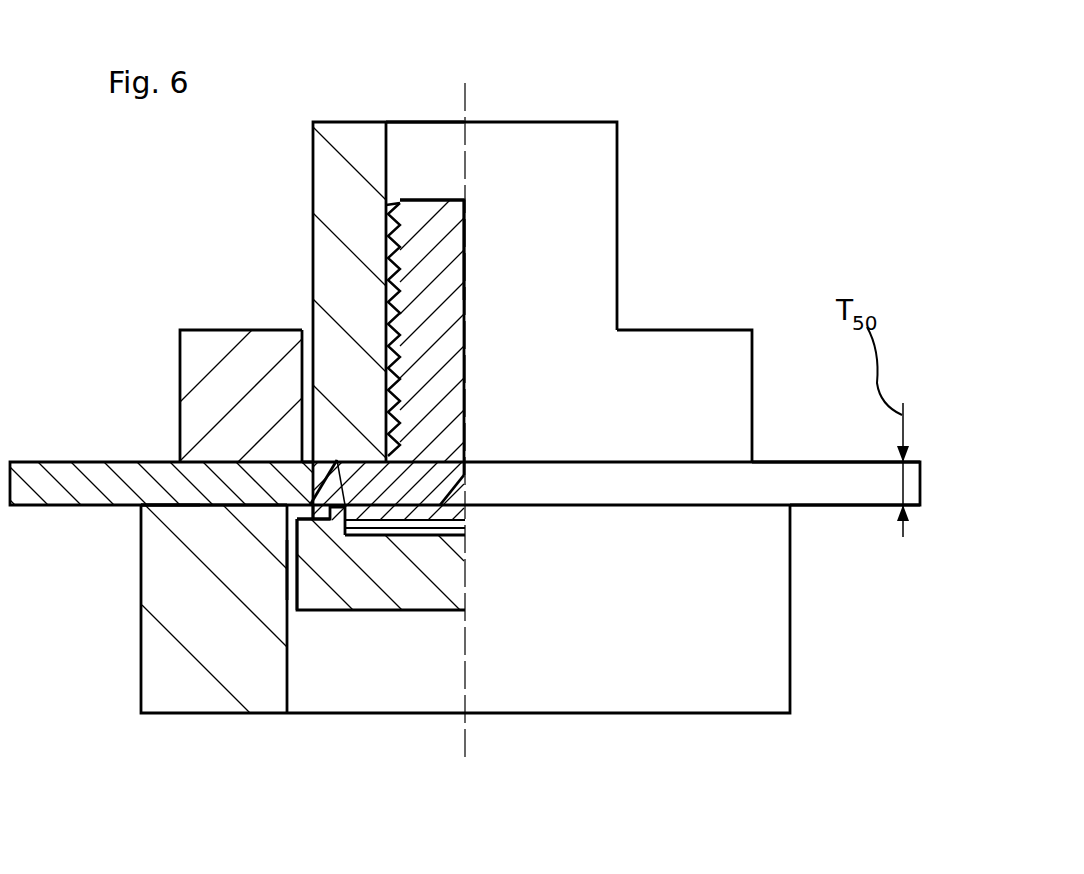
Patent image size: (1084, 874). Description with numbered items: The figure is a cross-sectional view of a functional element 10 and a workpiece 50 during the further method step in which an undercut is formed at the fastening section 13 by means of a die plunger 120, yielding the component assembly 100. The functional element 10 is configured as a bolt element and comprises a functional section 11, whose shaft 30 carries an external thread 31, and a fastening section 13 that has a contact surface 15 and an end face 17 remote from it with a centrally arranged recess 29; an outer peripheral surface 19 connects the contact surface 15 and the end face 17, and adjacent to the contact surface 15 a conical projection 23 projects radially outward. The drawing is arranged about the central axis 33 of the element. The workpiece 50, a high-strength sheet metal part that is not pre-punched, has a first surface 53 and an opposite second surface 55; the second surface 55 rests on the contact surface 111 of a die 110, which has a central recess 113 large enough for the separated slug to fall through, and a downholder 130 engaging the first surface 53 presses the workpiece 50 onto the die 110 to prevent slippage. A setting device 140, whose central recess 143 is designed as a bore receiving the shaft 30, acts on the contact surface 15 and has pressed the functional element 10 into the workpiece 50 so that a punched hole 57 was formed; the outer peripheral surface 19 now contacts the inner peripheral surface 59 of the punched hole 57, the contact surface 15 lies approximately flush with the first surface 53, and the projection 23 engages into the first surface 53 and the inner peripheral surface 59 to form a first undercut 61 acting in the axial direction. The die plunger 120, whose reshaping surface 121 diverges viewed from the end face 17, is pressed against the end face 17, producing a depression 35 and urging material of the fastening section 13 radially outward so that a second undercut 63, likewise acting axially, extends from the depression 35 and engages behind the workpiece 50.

The functional element 10 is at (437, 193).
The functional section 11 is at (453, 250).
The fastening section 13 is at (453, 483).
The contact surface 15 is at (344, 457).
The end face 17 is at (307, 517).
The outer peripheral surface 19 is at (307, 505).
The projection 23 is at (310, 472).
The recess 29 is at (440, 497).
The shaft 30 is at (453, 277).
The external thread 31 is at (387, 212).
The central axis 33 is at (463, 102).
The depression 35 is at (312, 517).
The workpiece 50 is at (44, 448).
The first surface 53 is at (830, 447).
The second surface 55 is at (887, 505).
The punched hole 57 is at (405, 478).
The inner peripheral surface 59 is at (300, 478).
The first undercut 61 is at (363, 473).
The second undercut 63 is at (313, 517).
The component assembly 100 is at (322, 447).
The die 110 is at (141, 641).
The contact surface 111 is at (200, 488).
The recess 113 is at (357, 687).
The die plunger 120 is at (437, 611).
The reshaping surface 121 is at (278, 540).
The downholder 130 is at (680, 316).
The setting device 140 is at (617, 152).
The recess 143 is at (413, 148).